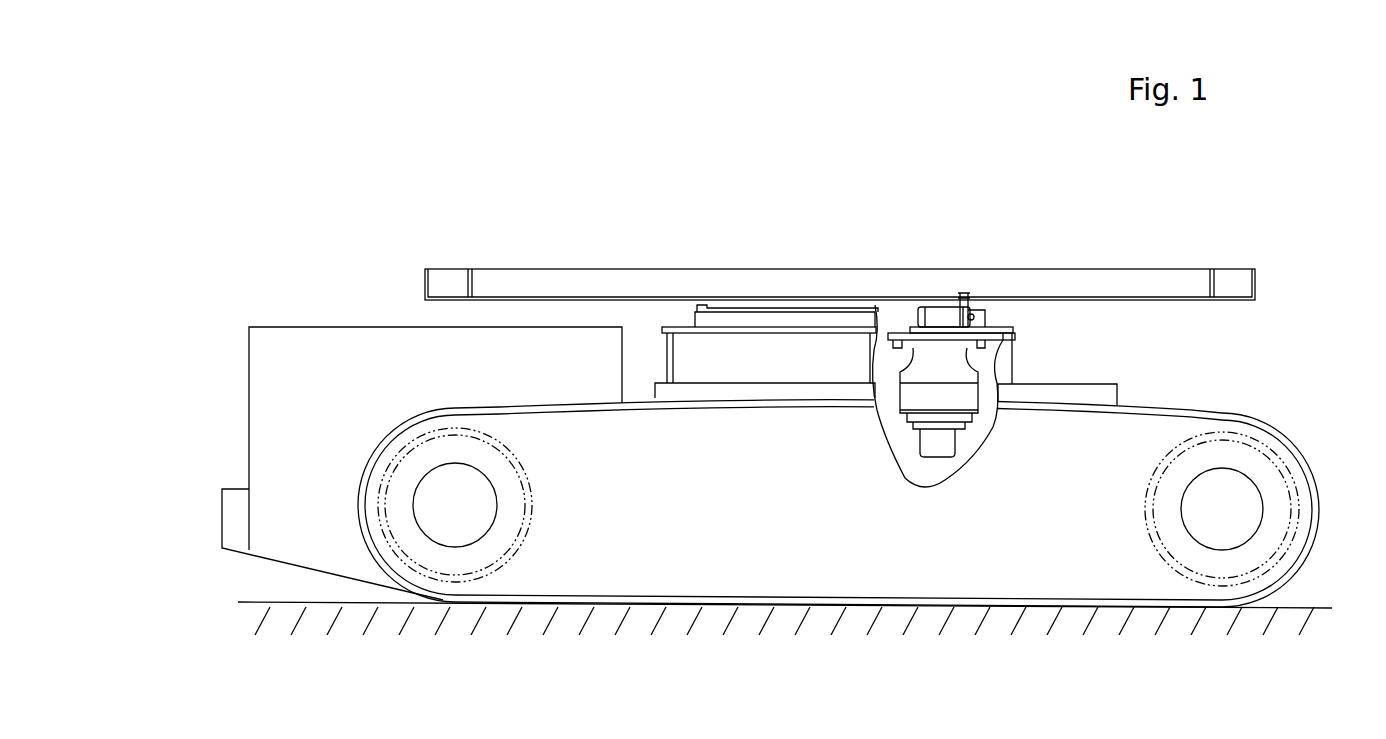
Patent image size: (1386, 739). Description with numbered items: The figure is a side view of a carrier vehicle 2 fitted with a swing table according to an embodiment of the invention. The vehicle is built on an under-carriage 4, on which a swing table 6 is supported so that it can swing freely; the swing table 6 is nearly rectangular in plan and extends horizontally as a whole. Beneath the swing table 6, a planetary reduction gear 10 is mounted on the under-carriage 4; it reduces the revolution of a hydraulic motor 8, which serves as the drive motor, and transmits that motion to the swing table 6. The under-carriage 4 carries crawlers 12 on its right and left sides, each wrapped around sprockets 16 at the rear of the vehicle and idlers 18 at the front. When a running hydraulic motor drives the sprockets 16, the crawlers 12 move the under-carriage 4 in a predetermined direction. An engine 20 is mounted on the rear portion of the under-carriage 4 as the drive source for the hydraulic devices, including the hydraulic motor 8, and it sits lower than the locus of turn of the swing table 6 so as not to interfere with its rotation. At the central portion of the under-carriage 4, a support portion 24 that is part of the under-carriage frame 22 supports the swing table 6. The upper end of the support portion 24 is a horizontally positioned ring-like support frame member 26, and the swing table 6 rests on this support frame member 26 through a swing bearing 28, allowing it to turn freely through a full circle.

The carrier vehicle 2 is at (840, 290).
The under-carriage 4 is at (771, 563).
The swing table 6 is at (538, 276).
The hydraulic motor 8 is at (930, 448).
The planetary reduction gear 10 is at (898, 432).
The crawlers 12 is at (361, 483).
The sprockets 16 is at (530, 524).
The idlers 18 is at (1146, 521).
The engine 20 is at (286, 352).
The under-carriage frame 22 is at (1122, 390).
The support portion 24 is at (1018, 354).
The support frame member 26 is at (1016, 333).
The swing bearing 28 is at (1006, 312).